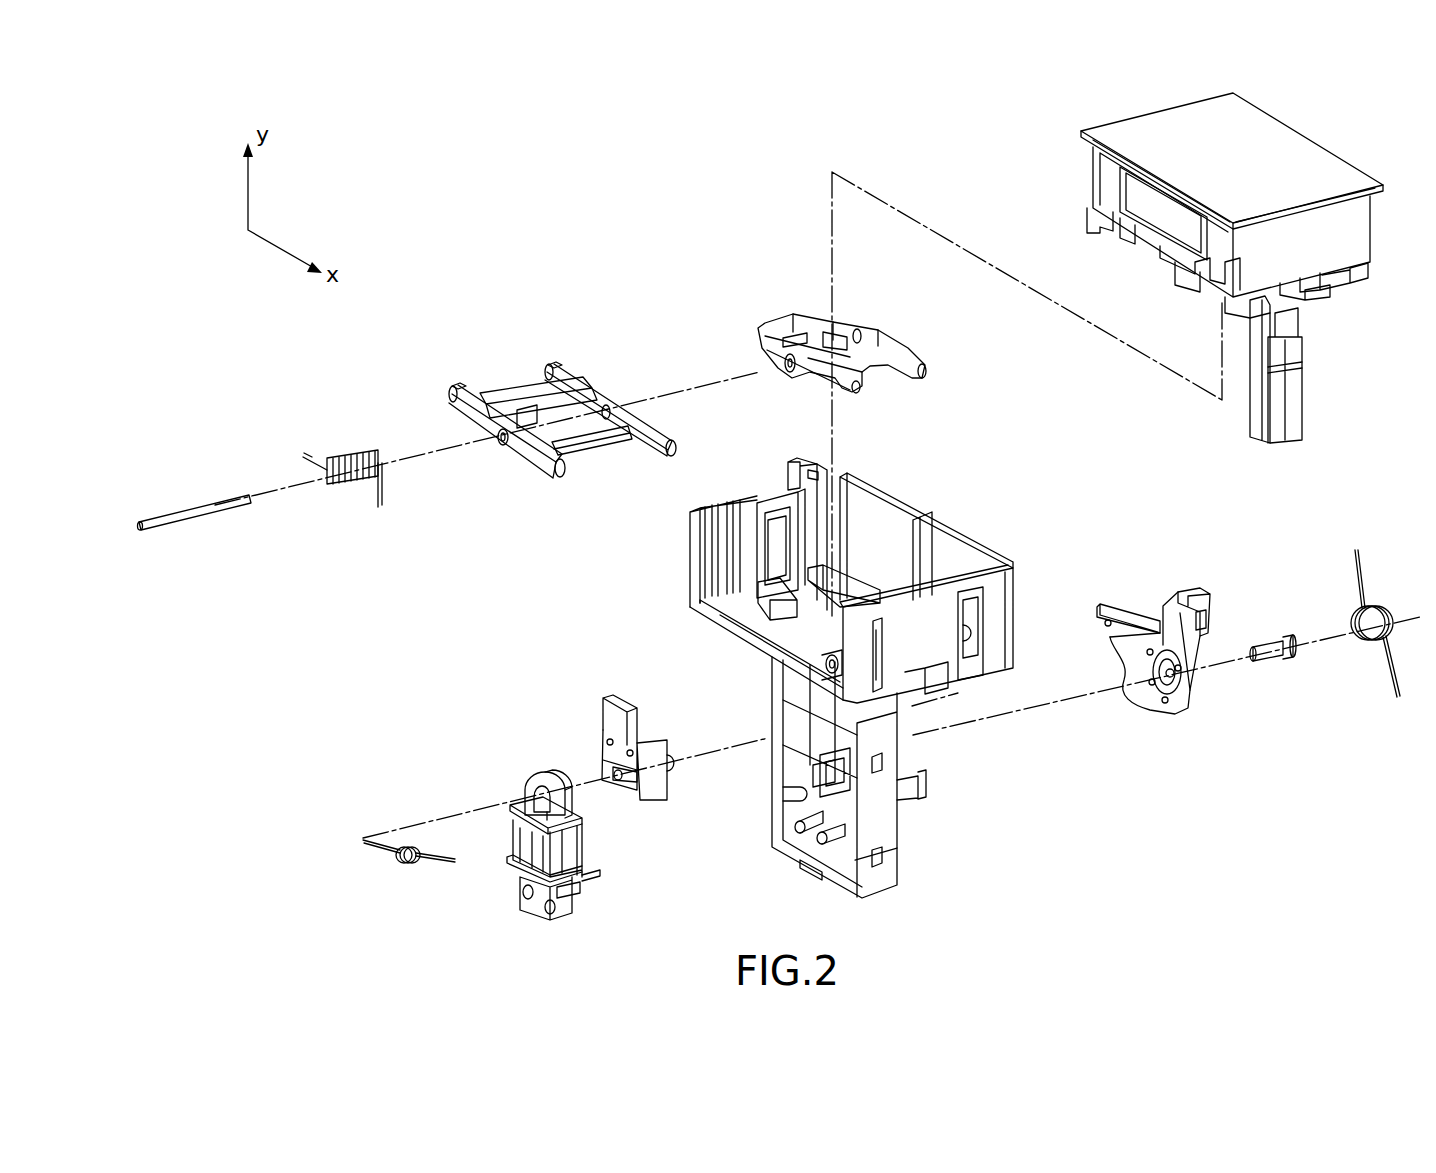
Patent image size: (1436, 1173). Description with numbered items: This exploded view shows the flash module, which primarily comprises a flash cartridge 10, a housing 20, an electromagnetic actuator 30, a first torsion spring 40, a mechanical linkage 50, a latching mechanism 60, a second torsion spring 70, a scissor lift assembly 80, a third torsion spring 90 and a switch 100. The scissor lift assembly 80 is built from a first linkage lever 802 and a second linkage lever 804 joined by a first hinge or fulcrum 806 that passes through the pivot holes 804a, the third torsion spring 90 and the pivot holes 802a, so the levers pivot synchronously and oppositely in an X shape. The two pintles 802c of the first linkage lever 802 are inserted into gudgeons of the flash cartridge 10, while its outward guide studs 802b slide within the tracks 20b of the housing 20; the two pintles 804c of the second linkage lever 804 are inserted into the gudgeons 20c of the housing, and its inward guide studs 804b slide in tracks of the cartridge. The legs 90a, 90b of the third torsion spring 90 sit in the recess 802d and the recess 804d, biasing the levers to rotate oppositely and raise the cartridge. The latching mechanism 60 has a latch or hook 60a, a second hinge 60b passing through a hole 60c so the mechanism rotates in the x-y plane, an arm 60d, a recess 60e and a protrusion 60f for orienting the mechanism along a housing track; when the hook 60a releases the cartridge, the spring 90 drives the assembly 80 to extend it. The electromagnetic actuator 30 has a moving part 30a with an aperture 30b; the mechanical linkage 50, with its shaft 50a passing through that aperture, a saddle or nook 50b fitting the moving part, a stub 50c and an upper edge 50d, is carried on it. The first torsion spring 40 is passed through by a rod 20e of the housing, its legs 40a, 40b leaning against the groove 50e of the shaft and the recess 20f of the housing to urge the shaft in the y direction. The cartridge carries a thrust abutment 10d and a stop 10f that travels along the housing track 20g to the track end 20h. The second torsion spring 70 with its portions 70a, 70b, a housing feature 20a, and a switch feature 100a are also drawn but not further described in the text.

The flash cartridge 10 is at (1148, 115).
The thrust abutment 10d is at (1188, 282).
The stop 10f is at (1342, 295).
The housing 20 is at (910, 506).
The housing opening 20a is at (775, 550).
The tracks 20b is at (870, 590).
The gudgeons 20c is at (782, 656).
The rod 20e is at (845, 760).
The recess 20f is at (850, 790).
The track 20g is at (977, 620).
The track end 20h is at (984, 600).
The electromagnetic actuator 30 is at (586, 905).
The moving part 30a is at (522, 800).
The aperture 30b is at (495, 815).
The first torsion spring 40 is at (393, 862).
The leg 40a is at (362, 840).
The leg 40b is at (452, 862).
The mechanical linkage 50 is at (600, 708).
The shaft 50a is at (616, 778).
The saddle or nook 50b is at (612, 770).
The stub 50c is at (676, 760).
The upper edge 50d is at (626, 696).
The groove 50e is at (632, 782).
The latching mechanism 60 is at (1210, 592).
The latch or hook 60a is at (1196, 590).
The second hinge 60b is at (1272, 652).
The hole 60c is at (1190, 708).
The arm 60d is at (1118, 650).
The recess 60e is at (1208, 622).
The protrusion 60f is at (1160, 620).
The second torsion spring 70 is at (1372, 660).
The spring arm 70a is at (1352, 560).
The spring arm 70b is at (1398, 688).
The scissor lift assembly 80 is at (688, 284).
The first linkage lever 802 is at (752, 352).
The pivot holes 802a is at (860, 335).
The outward guide studs 802b is at (790, 318).
The pintles 802c is at (930, 368).
The recess 802d is at (838, 320).
The second linkage lever 804 is at (500, 372).
The pivot holes 804a is at (608, 414).
The inward guide studs 804b is at (565, 370).
The pintles 804c is at (675, 448).
The recess 804d is at (480, 394).
The first hinge or fulcrum 806 is at (185, 510).
The third torsion spring 90 is at (348, 456).
The leg 90a is at (300, 458).
The leg 90b is at (378, 500).
The switch 100 is at (792, 470).
The clip tab 100a is at (826, 478).